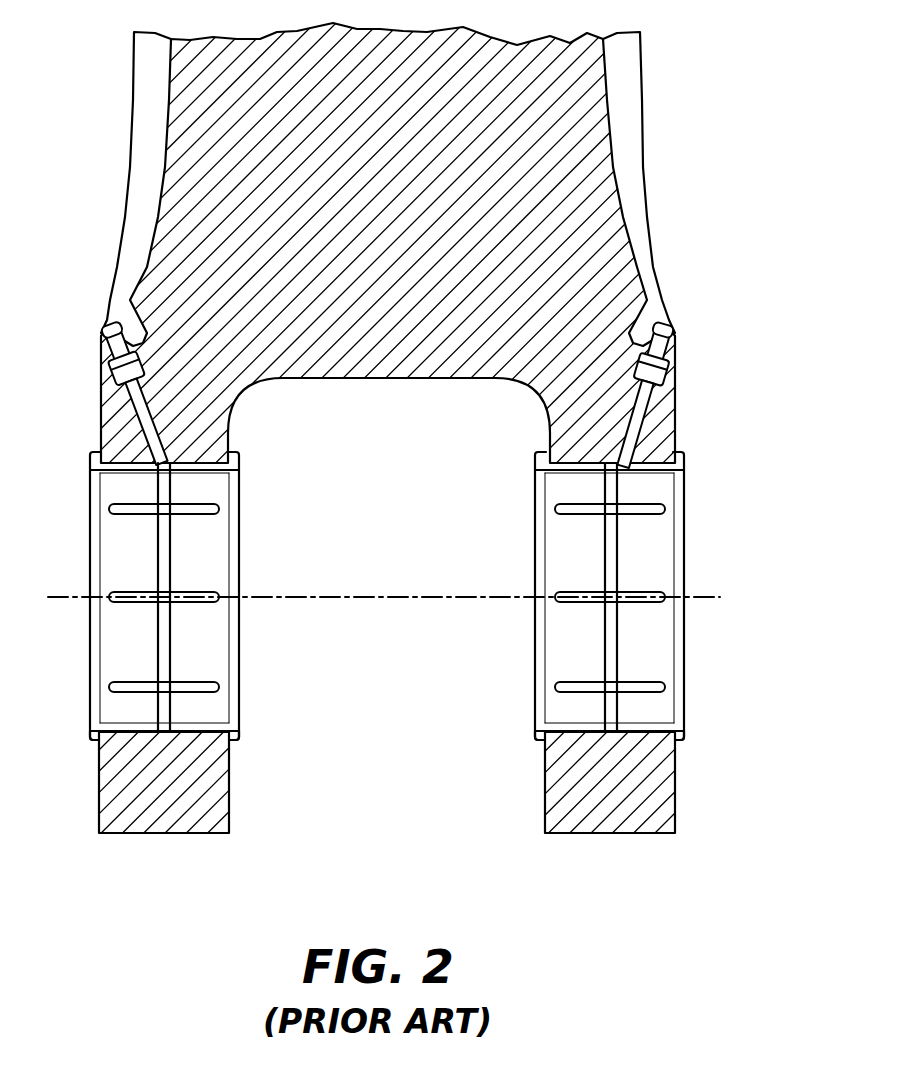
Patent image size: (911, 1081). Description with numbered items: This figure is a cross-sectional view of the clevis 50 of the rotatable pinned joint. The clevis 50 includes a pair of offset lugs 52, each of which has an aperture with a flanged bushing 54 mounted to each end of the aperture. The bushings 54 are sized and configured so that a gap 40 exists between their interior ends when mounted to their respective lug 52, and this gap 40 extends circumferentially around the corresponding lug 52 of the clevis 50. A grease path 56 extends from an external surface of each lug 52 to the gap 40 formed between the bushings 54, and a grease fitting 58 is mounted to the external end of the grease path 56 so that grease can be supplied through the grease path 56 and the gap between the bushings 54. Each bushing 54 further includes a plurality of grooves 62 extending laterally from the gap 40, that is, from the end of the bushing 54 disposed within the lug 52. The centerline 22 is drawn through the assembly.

The clevis 50 is at (705, 86).
The grease path 56 is at (140, 405).
The grease fitting 58 is at (104, 328).
The gap 40 is at (167, 550).
The grooves 62 is at (197, 513).
The axis 22 is at (720, 597).
The flanged bushing 54 is at (90, 738).
The lug 52 is at (232, 802).